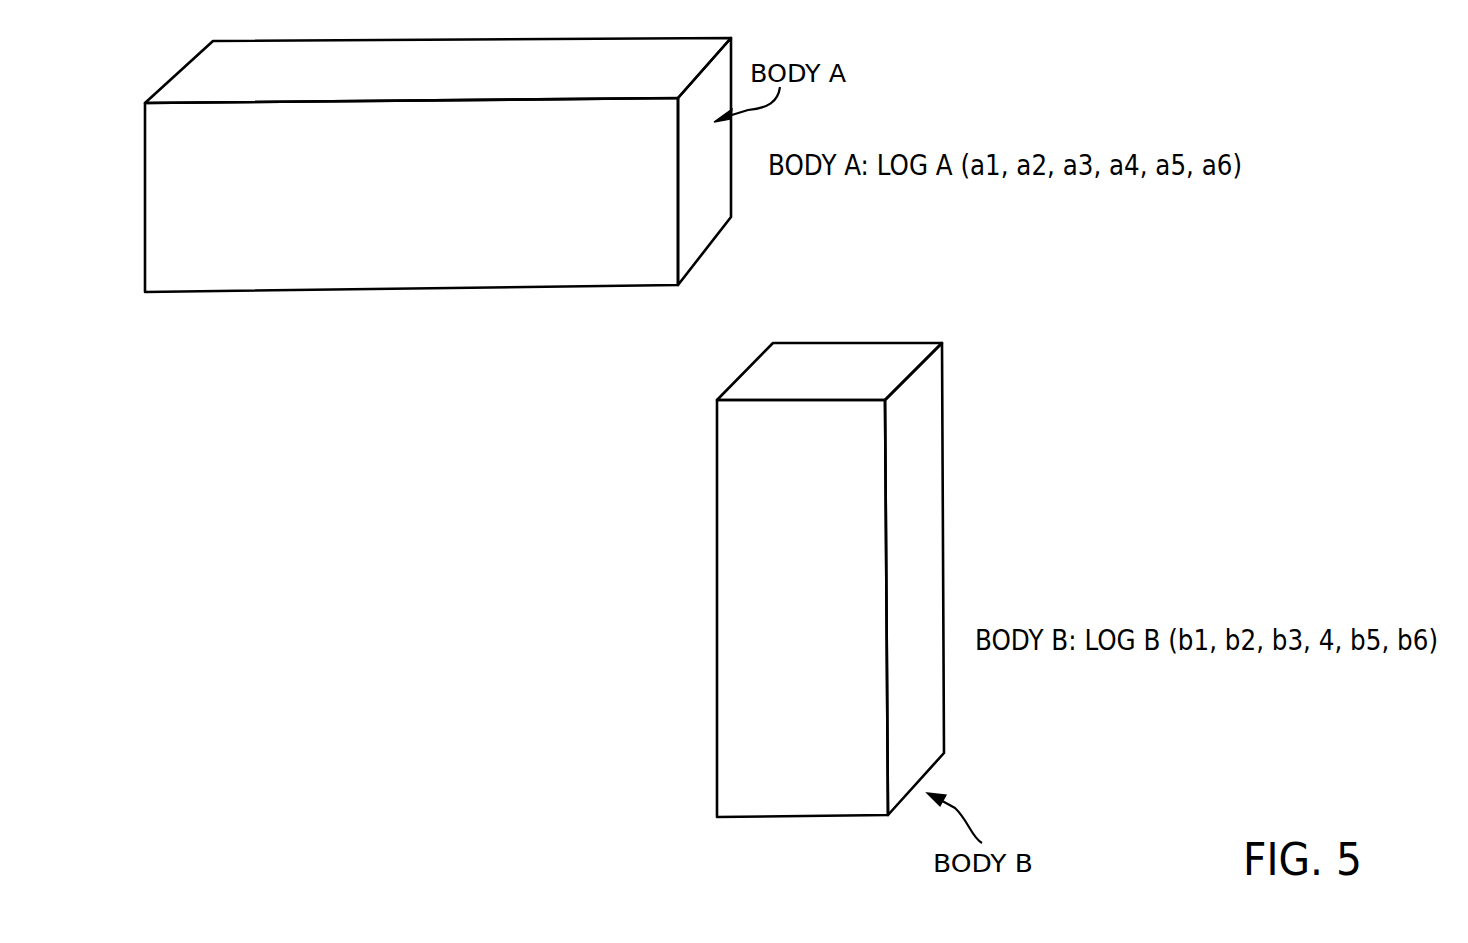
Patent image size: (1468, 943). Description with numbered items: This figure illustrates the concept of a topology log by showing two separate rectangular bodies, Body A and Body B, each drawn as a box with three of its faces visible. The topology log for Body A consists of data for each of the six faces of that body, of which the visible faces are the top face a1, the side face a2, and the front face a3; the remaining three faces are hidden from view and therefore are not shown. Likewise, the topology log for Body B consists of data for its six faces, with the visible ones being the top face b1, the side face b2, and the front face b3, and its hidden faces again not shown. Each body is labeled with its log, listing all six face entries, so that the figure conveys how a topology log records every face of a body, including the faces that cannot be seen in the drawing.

The face of Body A a1 is at (413, 88).
The face of Body A a2 is at (718, 169).
The face of Body A a3 is at (432, 217).
The face of Body B b1 is at (843, 388).
The face of Body B b2 is at (925, 555).
The face of Body B b3 is at (805, 606).